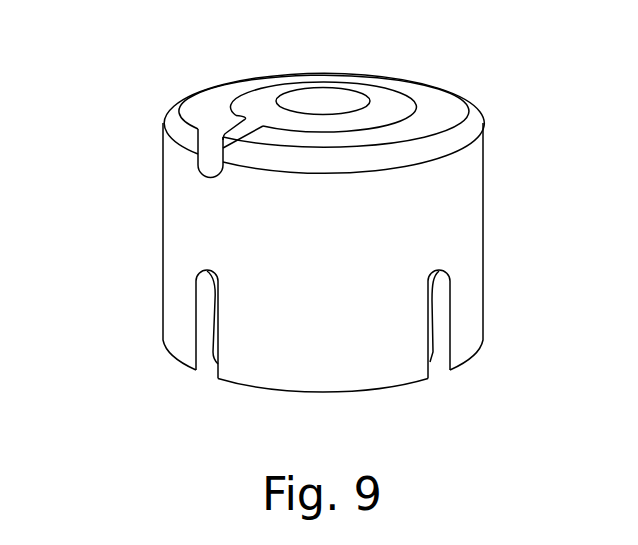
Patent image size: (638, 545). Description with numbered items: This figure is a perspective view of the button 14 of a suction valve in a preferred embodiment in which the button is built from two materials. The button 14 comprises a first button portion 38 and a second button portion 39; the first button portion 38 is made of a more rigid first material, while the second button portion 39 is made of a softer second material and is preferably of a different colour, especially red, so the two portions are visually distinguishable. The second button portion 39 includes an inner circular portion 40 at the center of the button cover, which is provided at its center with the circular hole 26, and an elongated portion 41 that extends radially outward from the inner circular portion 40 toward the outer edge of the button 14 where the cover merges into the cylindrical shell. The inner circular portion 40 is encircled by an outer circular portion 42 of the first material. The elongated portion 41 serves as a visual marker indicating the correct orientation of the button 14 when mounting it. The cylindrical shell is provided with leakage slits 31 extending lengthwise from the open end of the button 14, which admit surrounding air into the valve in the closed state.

The button 14 is at (101, 320).
The circular hole 26 is at (318, 92).
The leakage slits 31 is at (202, 379).
The first button portion 38 is at (468, 117).
The second button portion 39 is at (214, 131).
The inner circular portion 40 is at (380, 94).
The elongated portion 41 is at (203, 148).
The outer circular portion 42 is at (449, 81).